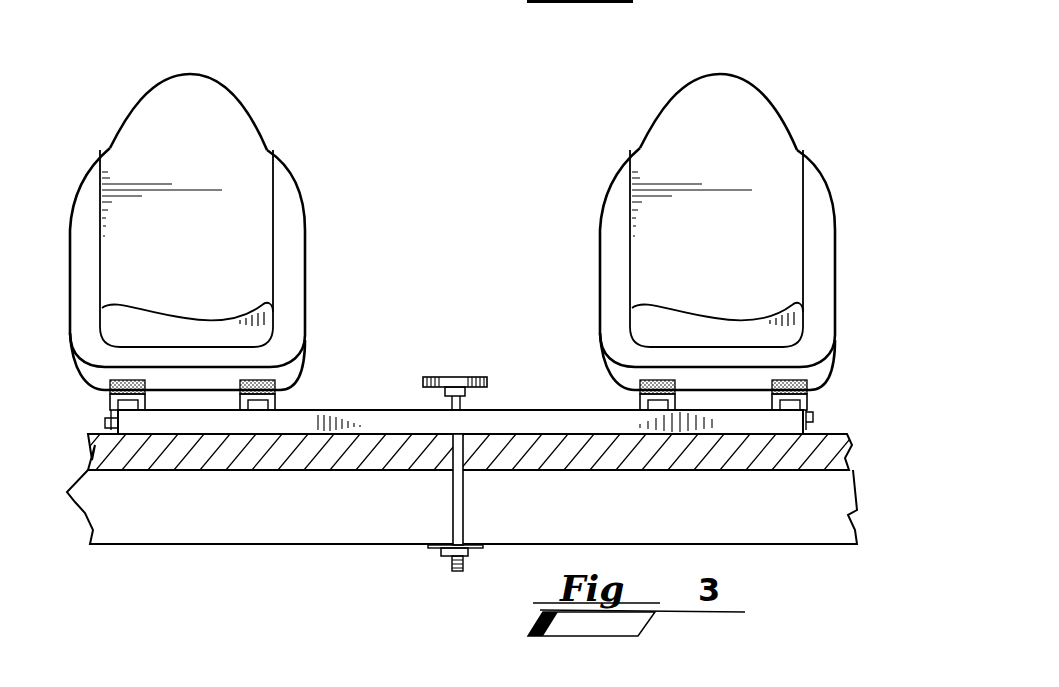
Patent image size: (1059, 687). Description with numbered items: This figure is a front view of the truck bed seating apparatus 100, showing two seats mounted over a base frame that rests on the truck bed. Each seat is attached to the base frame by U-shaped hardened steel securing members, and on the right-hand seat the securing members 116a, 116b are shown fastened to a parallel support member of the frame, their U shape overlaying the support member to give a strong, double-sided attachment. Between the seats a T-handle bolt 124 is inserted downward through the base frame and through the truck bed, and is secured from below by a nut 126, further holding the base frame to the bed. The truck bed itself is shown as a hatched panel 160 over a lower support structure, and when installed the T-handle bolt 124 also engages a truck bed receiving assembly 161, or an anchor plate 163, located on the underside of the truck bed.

The seating assembly 100 is at (481, 68).
The securing member 116a is at (676, 403).
The securing member 116b is at (812, 418).
The T-handle bolt 124 is at (460, 377).
The nut 126 is at (436, 552).
The floor panel 160 is at (532, 470).
The truck bed receiving assembly 161 is at (263, 545).
The anchor plate 163 is at (478, 548).